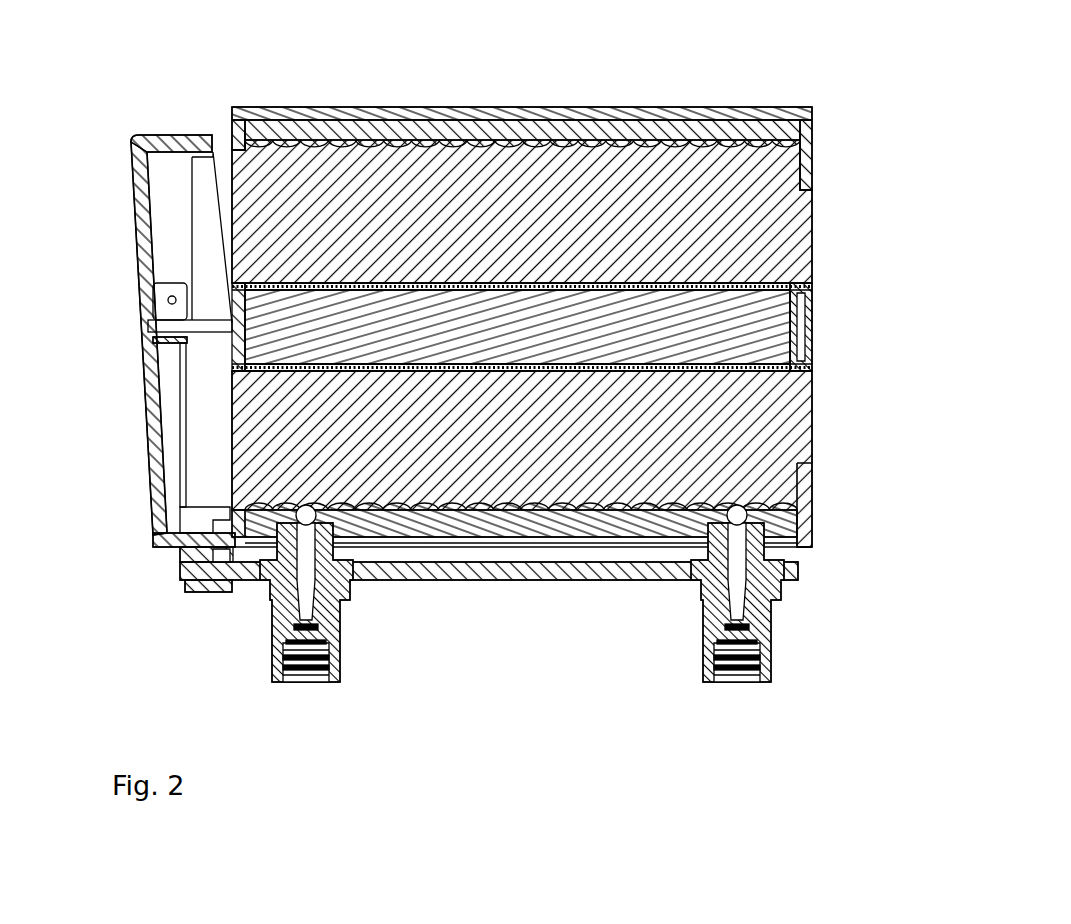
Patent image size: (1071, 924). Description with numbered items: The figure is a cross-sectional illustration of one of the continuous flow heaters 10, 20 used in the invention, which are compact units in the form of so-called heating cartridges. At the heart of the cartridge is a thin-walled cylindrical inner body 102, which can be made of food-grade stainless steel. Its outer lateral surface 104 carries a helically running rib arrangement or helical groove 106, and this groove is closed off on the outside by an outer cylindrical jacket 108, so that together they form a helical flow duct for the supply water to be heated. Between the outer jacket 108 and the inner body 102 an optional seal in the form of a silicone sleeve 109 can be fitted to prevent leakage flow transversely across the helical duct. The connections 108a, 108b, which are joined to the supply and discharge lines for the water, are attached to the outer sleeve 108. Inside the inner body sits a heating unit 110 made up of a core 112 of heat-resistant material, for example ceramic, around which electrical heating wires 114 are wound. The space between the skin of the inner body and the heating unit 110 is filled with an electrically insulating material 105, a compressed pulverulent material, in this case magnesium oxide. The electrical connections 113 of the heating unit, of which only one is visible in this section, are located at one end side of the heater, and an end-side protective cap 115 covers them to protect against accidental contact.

The continuous flow heater 10 is at (814, 77).
The continuous flow heater 20 is at (471, 375).
The cylindrical inner body 102 is at (813, 220).
The lateral surface 104 is at (493, 510).
The electrically insulating material 105 is at (773, 432).
The helical groove 106 is at (623, 518).
The outer cylindrical jacket 108 is at (612, 115).
The connection 108a is at (295, 675).
The connection 108b is at (747, 673).
The silicone sleeve 109 is at (710, 116).
The heating unit 110 is at (807, 272).
The core 112 is at (810, 323).
The electrical connections 113 is at (160, 300).
The electrical heating wires 114 is at (787, 373).
The end-side protective cap 115 is at (133, 207).